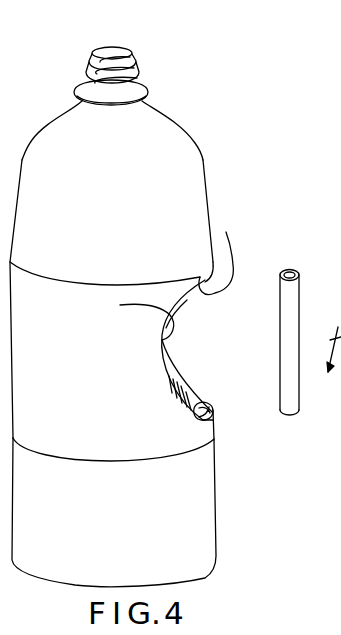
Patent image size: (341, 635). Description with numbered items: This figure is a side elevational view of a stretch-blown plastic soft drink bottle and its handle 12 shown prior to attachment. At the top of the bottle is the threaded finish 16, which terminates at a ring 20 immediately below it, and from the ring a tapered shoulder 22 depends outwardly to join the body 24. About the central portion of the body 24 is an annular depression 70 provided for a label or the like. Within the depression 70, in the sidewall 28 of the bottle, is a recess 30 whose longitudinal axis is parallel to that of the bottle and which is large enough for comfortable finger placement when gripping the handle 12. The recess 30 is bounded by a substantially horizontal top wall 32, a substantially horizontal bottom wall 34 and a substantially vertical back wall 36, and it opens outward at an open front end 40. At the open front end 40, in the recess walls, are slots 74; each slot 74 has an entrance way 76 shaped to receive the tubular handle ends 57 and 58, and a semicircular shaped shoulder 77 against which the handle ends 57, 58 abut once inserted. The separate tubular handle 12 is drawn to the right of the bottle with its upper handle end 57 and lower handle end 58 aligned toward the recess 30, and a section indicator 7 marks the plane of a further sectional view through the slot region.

The threaded finish 16 is at (100, 75).
The ring 20 is at (80, 85).
The shoulder 22 is at (163, 115).
The annular depression 70 is at (54, 326).
The top wall 32 is at (229, 224).
The back wall 36 is at (137, 317).
The recess 30 is at (185, 330).
The open front end 40 is at (210, 334).
The bottom wall 34 is at (170, 395).
The semicircular shaped shoulder 77 is at (202, 407).
The entrance way 76 is at (212, 408).
The slot 74 is at (202, 427).
The sidewall 28 is at (220, 422).
The body 24 is at (142, 516).
The handle 12 is at (308, 300).
The handle end 57 is at (288, 268).
The handle end 58 is at (302, 406).
The section line 7- 7 is at (334, 335).